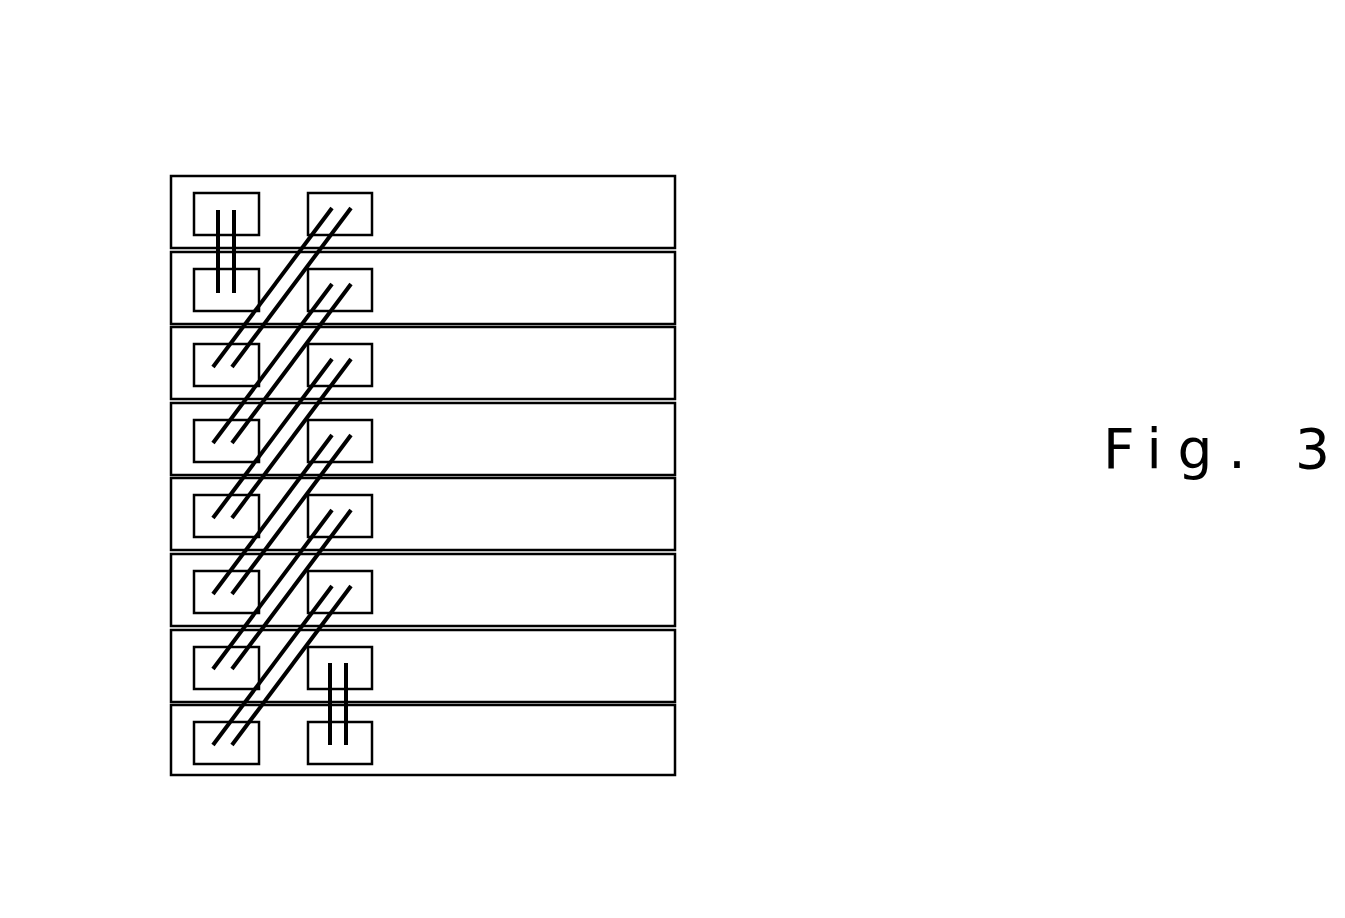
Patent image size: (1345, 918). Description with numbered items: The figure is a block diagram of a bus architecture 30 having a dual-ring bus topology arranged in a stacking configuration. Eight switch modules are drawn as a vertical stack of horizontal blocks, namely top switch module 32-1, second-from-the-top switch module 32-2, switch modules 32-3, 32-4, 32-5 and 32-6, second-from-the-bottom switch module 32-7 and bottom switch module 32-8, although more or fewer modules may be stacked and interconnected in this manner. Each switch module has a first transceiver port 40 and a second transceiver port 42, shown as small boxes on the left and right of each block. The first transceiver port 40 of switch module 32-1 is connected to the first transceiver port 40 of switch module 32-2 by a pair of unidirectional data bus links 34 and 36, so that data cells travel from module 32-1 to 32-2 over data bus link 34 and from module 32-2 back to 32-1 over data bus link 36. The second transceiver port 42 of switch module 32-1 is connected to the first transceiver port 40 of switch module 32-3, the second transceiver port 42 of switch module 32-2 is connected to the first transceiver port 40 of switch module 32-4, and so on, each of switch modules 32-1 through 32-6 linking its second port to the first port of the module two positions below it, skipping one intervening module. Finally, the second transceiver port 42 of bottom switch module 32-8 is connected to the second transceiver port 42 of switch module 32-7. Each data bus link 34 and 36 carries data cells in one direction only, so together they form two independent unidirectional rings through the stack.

The bus architecture 30 is at (720, 62).
The top switch module 32-1 is at (660, 206).
The second-from-the-top switch module 32-2 is at (660, 282).
The switch module 32-3 is at (660, 357).
The switch module 32-4 is at (660, 433).
The switch module 32-5 is at (660, 508).
The switch module 32-6 is at (660, 584).
The second-from-the-bottom switch module 32-7 is at (660, 660).
The bottom switch module 32-8 is at (660, 735).
The data bus link 34 is at (217, 223).
The data bus link 36 is at (233, 258).
The first transceiver port 40 is at (238, 198).
The second transceiver port 42 is at (343, 197).